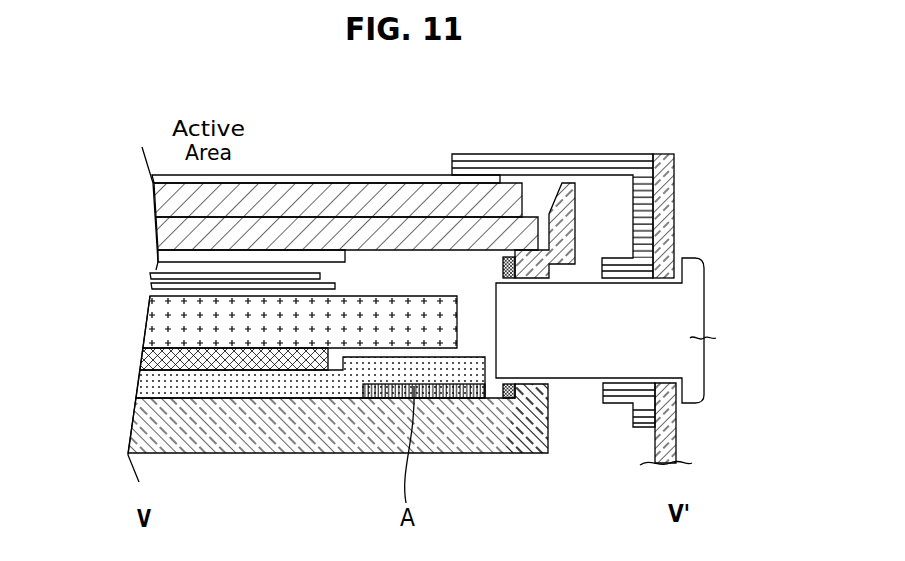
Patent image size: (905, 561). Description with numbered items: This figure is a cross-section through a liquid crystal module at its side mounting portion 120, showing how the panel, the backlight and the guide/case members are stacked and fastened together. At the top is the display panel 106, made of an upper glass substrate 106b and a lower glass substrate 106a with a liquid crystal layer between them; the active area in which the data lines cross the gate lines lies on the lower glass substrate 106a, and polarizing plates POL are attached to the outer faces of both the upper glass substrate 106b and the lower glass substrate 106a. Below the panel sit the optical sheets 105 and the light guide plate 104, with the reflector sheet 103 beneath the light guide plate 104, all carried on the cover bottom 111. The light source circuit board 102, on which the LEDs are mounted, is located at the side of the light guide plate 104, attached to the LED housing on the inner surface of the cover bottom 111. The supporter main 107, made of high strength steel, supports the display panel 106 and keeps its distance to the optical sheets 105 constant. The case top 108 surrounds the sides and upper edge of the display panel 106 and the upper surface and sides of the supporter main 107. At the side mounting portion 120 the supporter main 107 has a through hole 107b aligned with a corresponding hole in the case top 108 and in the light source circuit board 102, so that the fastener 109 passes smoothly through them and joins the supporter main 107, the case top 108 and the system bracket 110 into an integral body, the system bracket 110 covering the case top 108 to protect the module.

The light source circuit board 102 is at (503, 262).
The reflector sheet 103 is at (137, 356).
The light guide plate 104 is at (158, 322).
The optical sheets 105 is at (146, 272).
The display panel 106 is at (273, 219).
The lower glass substrate 106a is at (158, 234).
The upper glass substrate 106b is at (156, 205).
The supporter main 107 is at (324, 287).
The through hole 107b is at (560, 393).
The case top 108 is at (611, 167).
The fastener 109 is at (692, 339).
The system bracket 110 is at (661, 163).
The cover bottom 111 is at (134, 381).
The side mounting portion 120 is at (630, 271).
The polarizing plates POL is at (152, 179).